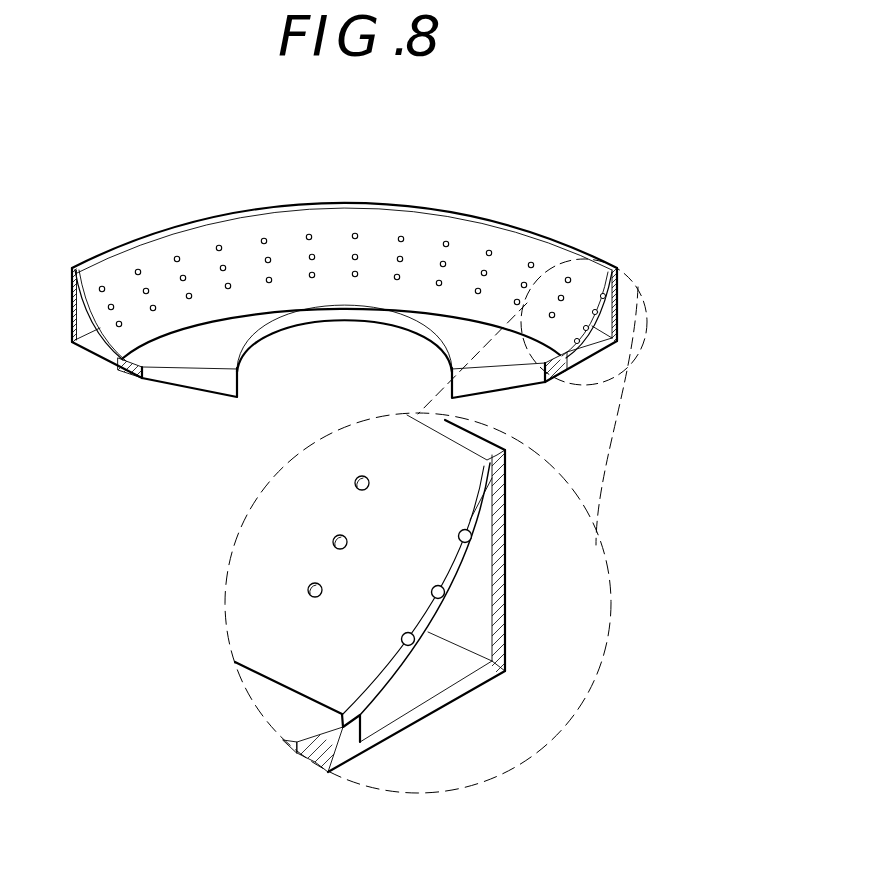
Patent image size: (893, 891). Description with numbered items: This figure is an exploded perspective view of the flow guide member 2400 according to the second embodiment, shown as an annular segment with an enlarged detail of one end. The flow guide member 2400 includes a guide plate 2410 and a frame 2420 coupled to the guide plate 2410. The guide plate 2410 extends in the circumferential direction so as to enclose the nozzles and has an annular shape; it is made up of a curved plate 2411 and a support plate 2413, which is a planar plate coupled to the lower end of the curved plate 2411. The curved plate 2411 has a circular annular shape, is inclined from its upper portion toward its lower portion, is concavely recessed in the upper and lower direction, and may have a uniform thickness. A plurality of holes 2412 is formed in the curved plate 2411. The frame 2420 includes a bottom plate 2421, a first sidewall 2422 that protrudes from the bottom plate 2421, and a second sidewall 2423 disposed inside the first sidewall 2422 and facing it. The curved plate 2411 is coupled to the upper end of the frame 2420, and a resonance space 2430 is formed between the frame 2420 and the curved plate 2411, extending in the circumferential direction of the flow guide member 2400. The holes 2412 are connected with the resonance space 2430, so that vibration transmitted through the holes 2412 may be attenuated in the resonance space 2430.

The flow guide member 2400 is at (373, 186).
The guide plate 2410 is at (152, 437).
The curved plate 2411 is at (110, 320).
The holes 2412 is at (310, 588).
The support plate 2413 is at (172, 352).
The frame 2420 is at (690, 652).
The bottom plate 2421 is at (433, 670).
The first sidewall 2422 is at (478, 612).
The second sidewall 2423 is at (375, 726).
The resonance space 2430 is at (474, 583).